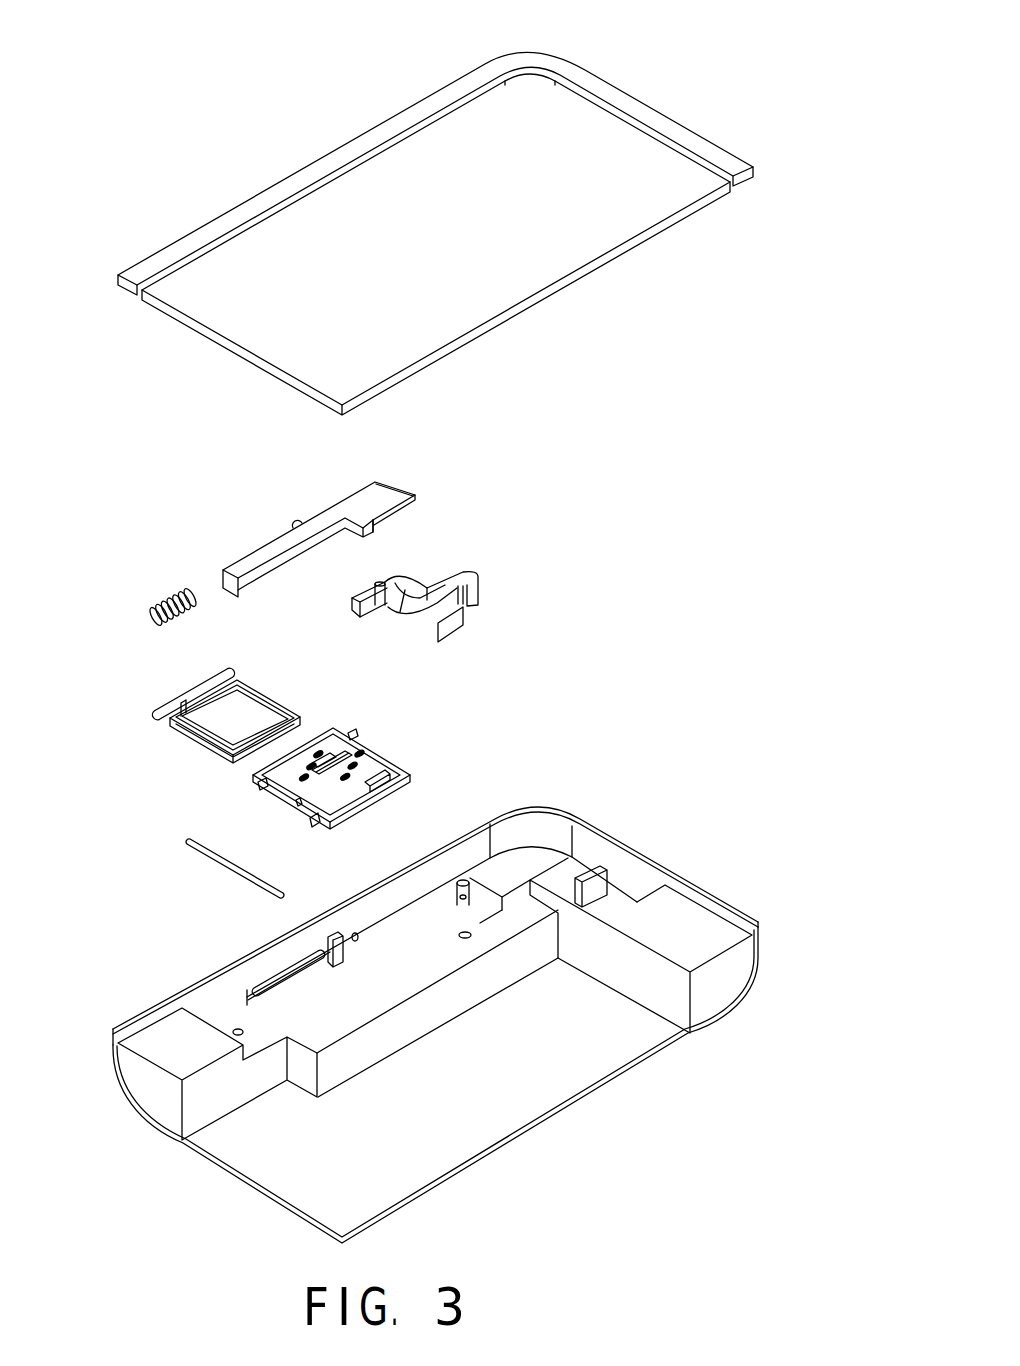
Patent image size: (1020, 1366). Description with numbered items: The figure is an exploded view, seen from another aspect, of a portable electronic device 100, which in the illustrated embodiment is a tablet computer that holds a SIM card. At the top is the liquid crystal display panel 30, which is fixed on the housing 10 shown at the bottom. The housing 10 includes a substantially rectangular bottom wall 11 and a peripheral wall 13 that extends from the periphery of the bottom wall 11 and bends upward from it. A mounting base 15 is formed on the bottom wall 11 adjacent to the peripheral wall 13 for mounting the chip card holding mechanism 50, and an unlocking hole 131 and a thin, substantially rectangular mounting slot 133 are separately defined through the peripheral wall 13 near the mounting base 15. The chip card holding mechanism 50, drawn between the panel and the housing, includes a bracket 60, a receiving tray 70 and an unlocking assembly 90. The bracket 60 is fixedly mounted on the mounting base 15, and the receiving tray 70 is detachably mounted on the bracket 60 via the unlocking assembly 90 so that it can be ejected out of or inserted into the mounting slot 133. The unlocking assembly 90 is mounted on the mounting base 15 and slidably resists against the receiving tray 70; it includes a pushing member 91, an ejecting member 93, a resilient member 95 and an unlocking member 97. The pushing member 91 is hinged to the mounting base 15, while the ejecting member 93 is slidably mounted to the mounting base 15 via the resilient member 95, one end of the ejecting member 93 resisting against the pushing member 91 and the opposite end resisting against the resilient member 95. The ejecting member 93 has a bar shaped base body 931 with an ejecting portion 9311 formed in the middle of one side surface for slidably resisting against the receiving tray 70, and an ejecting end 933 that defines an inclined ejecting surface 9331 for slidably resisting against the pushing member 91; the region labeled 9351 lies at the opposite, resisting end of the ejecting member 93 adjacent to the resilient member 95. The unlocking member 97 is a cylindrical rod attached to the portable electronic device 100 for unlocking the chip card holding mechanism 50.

The portable electronic device 100 is at (262, 34).
The liquid crystal display (LCD) panel 30 is at (617, 163).
The unlocking assembly 90 is at (200, 448).
The ejecting member 93 is at (250, 538).
The base body 931 is at (298, 535).
The ejecting portion 9311 is at (297, 522).
The ejecting end 933 is at (380, 500).
The inclined ejecting surface 9331 is at (383, 480).
The end block 9351 is at (228, 583).
The resilient member 95 is at (150, 612).
The chip card holding mechanism 50 is at (566, 593).
The pushing member 91 is at (467, 578).
The receiving tray 70 is at (262, 697).
The bracket 60 is at (367, 758).
The unlocking member 97 is at (221, 860).
The housing 10 is at (717, 980).
The peripheral wall 13 is at (528, 826).
The unlocking hole 131 is at (348, 931).
The mounting slot 133 is at (307, 980).
The bottom wall 11 is at (587, 1038).
The mounting base 15 is at (333, 1020).